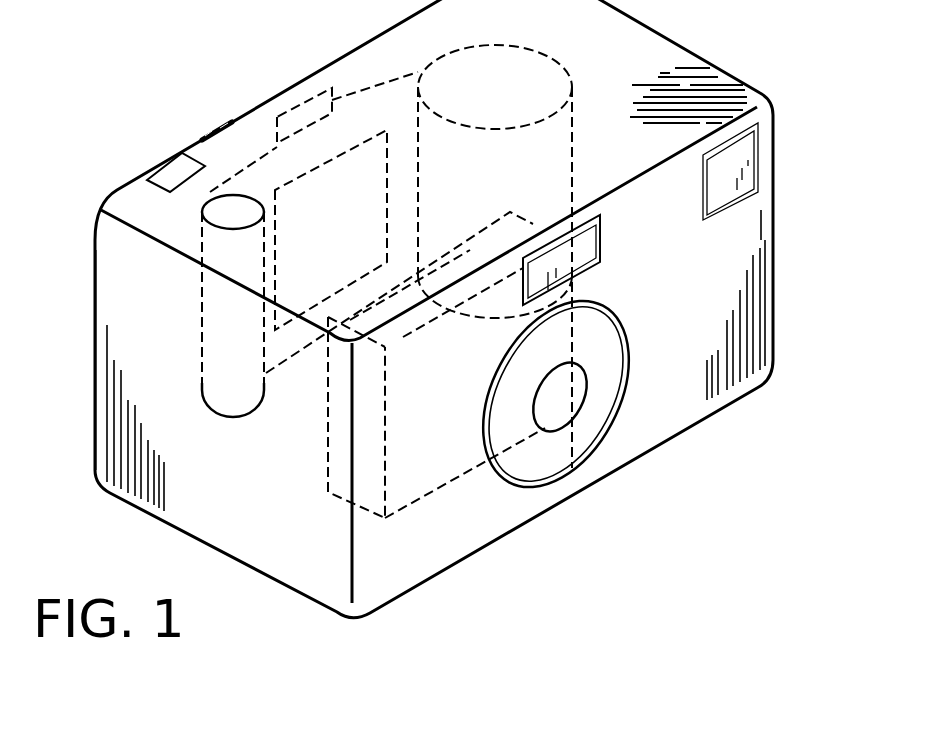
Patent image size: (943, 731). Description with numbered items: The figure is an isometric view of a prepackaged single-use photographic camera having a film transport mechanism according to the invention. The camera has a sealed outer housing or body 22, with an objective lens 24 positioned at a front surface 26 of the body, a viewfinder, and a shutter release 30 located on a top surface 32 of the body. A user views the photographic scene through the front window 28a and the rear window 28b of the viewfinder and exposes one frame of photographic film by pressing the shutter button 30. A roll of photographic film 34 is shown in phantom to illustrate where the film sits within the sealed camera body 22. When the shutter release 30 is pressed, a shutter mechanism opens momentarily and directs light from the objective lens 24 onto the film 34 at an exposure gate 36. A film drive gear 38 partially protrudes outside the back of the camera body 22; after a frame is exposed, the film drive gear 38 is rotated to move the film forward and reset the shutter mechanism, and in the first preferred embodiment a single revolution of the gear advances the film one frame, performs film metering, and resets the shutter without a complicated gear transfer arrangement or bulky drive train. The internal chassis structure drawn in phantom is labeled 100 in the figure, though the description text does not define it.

The outer housing/body 22 is at (730, 400).
The objective lens 24 is at (543, 487).
The front surface 26 is at (767, 320).
The front window 28a is at (600, 240).
The rear window 28b is at (313, 97).
The shutter release 30 is at (175, 165).
The top surface 32 is at (128, 212).
The roll of photographic film 34 is at (397, 90).
The exposure gate 36 is at (390, 218).
The film drive gear 38 is at (225, 122).
The internal chassis 100 is at (328, 423).